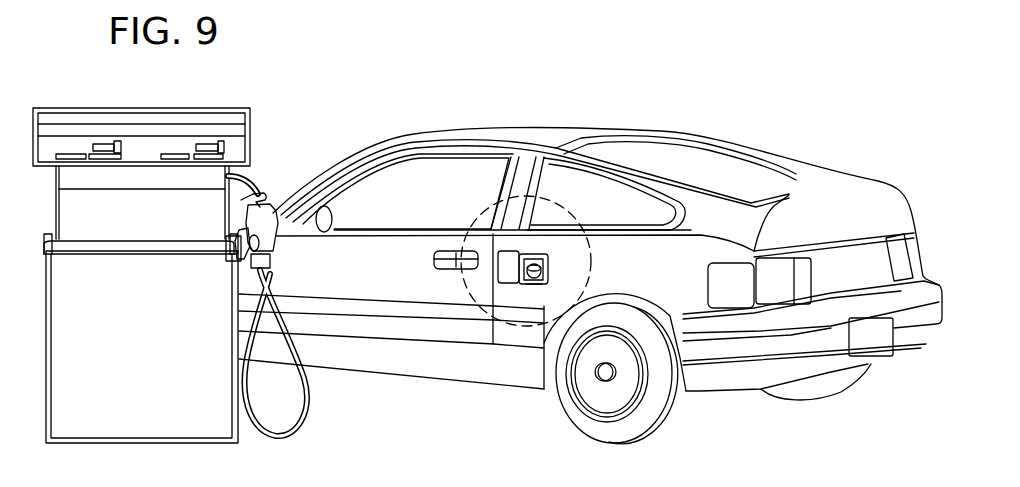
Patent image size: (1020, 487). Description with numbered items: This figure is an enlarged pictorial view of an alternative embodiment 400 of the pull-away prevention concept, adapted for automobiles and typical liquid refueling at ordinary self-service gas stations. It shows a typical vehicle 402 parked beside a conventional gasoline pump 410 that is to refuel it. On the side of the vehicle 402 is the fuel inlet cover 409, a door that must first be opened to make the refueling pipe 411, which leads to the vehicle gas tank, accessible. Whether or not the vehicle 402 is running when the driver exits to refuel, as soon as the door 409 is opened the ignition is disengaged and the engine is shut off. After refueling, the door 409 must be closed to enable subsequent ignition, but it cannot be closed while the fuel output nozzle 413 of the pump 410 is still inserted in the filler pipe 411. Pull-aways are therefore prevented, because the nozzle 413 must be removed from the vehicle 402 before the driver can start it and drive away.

The gasoline pump 410 is at (263, 127).
The vehicle 402 is at (508, 127).
The fuel output nozzle 413 is at (270, 235).
The fuel inlet cover 409 is at (466, 288).
The alternative embodiment 400 is at (562, 267).
The refueling pipe 411 is at (535, 284).